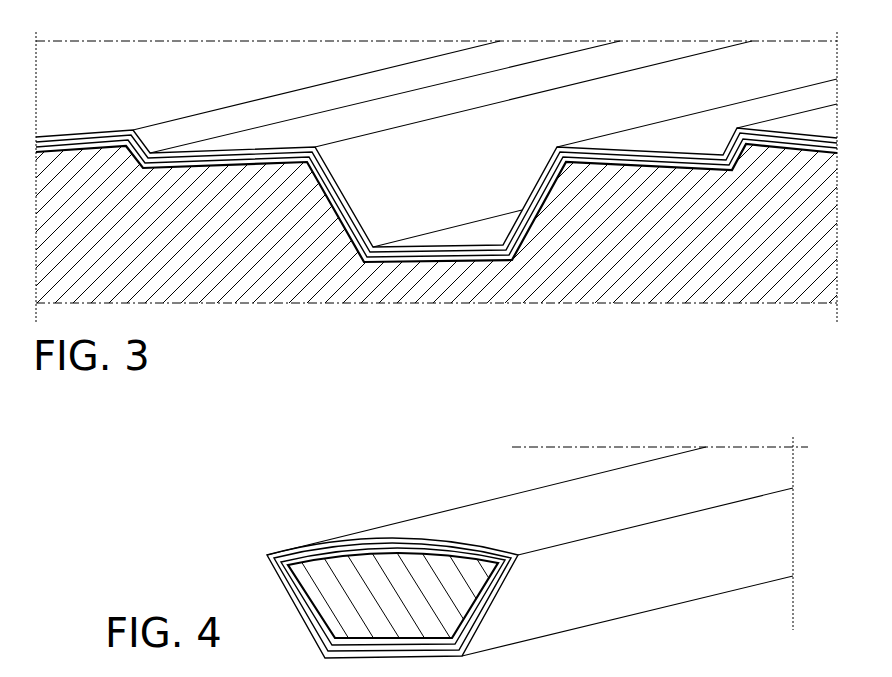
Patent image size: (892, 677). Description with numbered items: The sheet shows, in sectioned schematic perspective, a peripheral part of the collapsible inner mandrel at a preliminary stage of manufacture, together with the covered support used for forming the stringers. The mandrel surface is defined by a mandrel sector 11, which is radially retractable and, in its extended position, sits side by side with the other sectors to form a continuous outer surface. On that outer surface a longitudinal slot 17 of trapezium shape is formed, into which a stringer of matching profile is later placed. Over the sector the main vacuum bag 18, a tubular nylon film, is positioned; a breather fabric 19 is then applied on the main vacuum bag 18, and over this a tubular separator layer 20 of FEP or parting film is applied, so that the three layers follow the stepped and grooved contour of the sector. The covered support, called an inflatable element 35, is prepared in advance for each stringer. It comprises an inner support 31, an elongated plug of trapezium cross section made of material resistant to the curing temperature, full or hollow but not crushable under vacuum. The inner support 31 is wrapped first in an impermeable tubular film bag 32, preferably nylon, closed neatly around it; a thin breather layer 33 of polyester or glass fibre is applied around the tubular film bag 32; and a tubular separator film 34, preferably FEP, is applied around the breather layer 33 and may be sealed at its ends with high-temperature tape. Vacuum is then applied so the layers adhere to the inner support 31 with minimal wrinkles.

In FIG. 3, the mandrel sector 11 is at (212, 258).
In FIG. 3, the longitudinal slot 17 is at (481, 193).
In FIG. 3, the main vacuum bag 18 is at (370, 246).
In FIG. 3, the breather fabric 19 is at (362, 235).
In FIG. 3, the separator layer 20 is at (330, 155).
In FIG. 4, the inner support 31 is at (403, 610).
In FIG. 4, the tubular film bag 32 is at (473, 627).
In FIG. 4, the breather layer 33 is at (497, 598).
In FIG. 4, the tubular separator film 34 is at (518, 563).
In FIG. 4, the inflatable element 35 is at (269, 565).